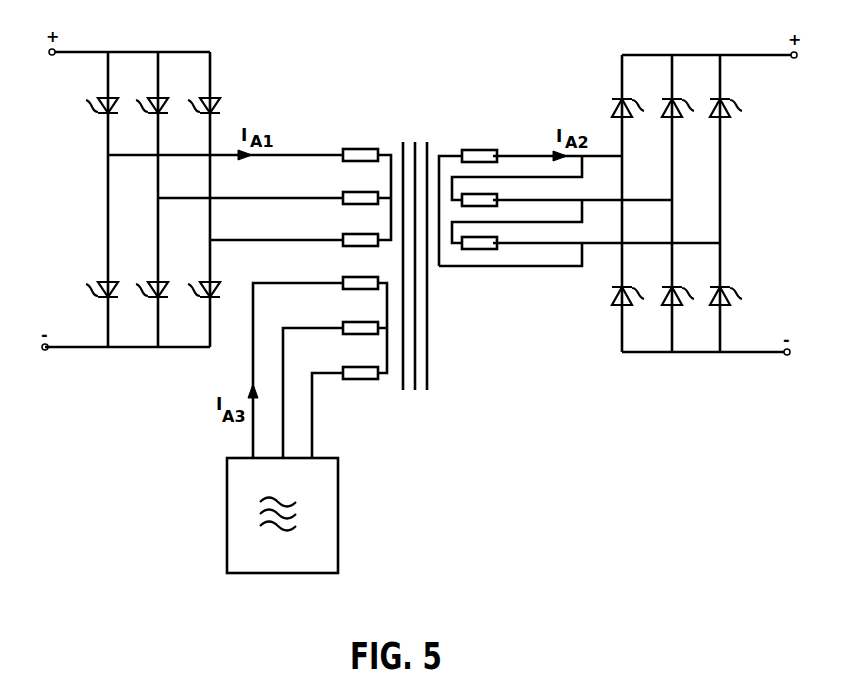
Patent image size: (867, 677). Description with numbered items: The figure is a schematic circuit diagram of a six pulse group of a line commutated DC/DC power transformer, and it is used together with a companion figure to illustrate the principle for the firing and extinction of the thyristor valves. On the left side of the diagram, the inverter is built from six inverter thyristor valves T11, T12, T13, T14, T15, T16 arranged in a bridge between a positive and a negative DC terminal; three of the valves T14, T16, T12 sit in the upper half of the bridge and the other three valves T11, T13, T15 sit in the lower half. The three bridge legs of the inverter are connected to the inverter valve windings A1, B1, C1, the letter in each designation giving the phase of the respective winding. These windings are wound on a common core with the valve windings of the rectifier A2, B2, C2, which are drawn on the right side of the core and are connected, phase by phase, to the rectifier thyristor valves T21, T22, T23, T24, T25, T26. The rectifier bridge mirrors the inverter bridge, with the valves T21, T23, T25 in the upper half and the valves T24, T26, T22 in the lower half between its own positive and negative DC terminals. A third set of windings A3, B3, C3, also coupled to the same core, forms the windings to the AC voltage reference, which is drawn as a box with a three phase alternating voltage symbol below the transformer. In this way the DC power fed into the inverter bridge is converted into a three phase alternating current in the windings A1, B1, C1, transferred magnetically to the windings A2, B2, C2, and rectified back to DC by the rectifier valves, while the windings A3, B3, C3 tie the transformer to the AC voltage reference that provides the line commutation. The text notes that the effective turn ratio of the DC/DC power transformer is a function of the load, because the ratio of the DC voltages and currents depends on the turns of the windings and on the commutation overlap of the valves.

The inverter thyristor valve T11 is at (91, 277).
The inverter thyristor valve T12 is at (195, 93).
The inverter thyristor valve T13 is at (142, 277).
The inverter thyristor valve T14 is at (91, 93).
The inverter thyristor valve T15 is at (195, 277).
The inverter thyristor valve T16 is at (142, 93).
The rectifier thyristor valve T21 is at (637, 97).
The rectifier thyristor valve T22 is at (735, 283).
The rectifier thyristor valve T23 is at (687, 97).
The rectifier thyristor valve T24 is at (637, 283).
The rectifier thyristor valve T25 is at (735, 97).
The rectifier thyristor valve T26 is at (687, 283).
The inverter valve winding A1 is at (352, 150).
The inverter valve winding B1 is at (352, 193).
The inverter valve winding C1 is at (352, 235).
The rectifier valve winding A2 is at (482, 153).
The rectifier valve winding B2 is at (482, 197).
The rectifier valve winding C2 is at (482, 240).
The winding to the AC voltage reference A3 is at (352, 278).
The winding to the AC voltage reference B3 is at (352, 323).
The winding to the AC voltage reference C3 is at (352, 368).